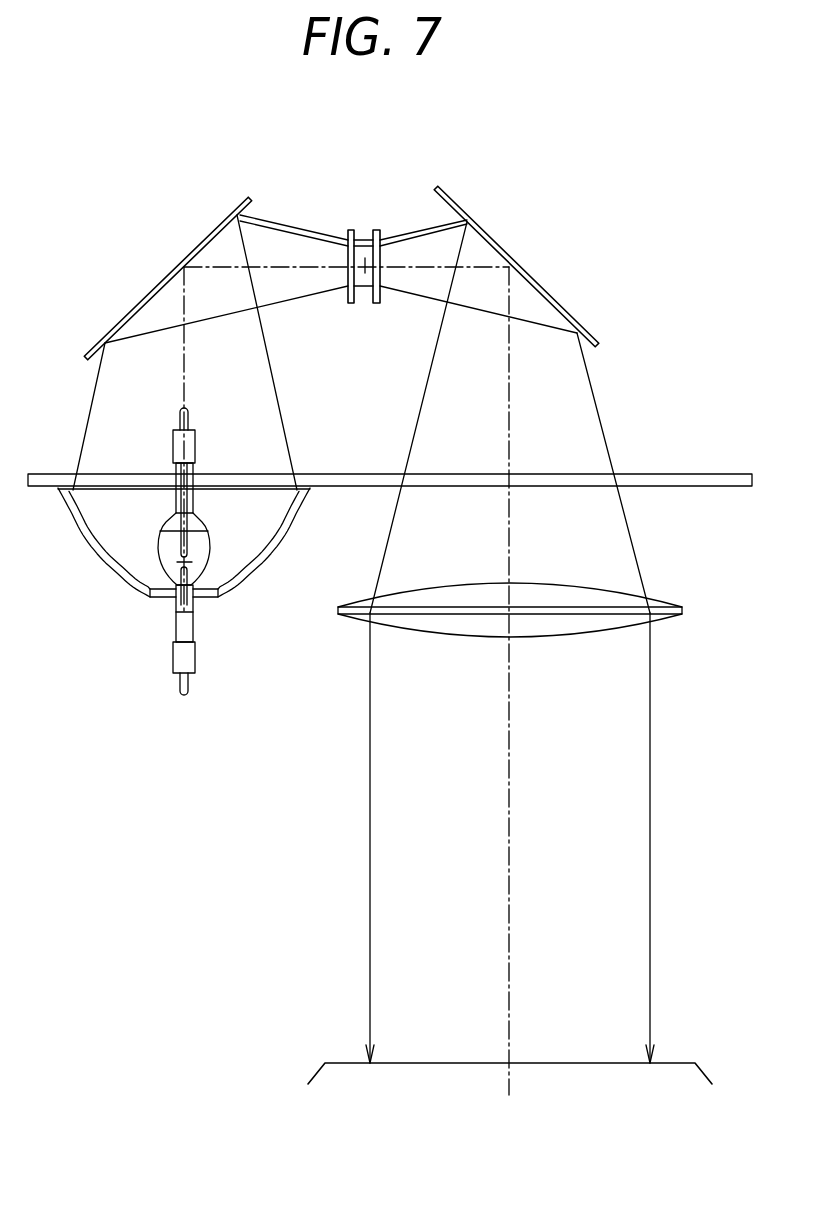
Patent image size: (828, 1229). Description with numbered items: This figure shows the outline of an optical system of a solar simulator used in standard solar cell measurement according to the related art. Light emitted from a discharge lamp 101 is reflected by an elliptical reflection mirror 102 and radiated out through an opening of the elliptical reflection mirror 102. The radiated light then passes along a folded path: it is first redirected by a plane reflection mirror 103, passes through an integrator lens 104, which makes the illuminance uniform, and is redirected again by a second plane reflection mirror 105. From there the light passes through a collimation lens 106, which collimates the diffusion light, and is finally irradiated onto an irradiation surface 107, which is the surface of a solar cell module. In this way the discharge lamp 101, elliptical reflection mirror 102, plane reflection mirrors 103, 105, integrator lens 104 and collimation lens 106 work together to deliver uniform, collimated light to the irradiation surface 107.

The discharge lamp 101 is at (205, 562).
The elliptical reflection mirror 102 is at (104, 560).
The plane reflection mirror 103 is at (195, 252).
The integrator lens 104 is at (364, 231).
The plane reflection mirror 105 is at (497, 238).
The collimation lens 106 is at (592, 597).
The irradiation surface 107 is at (590, 1062).